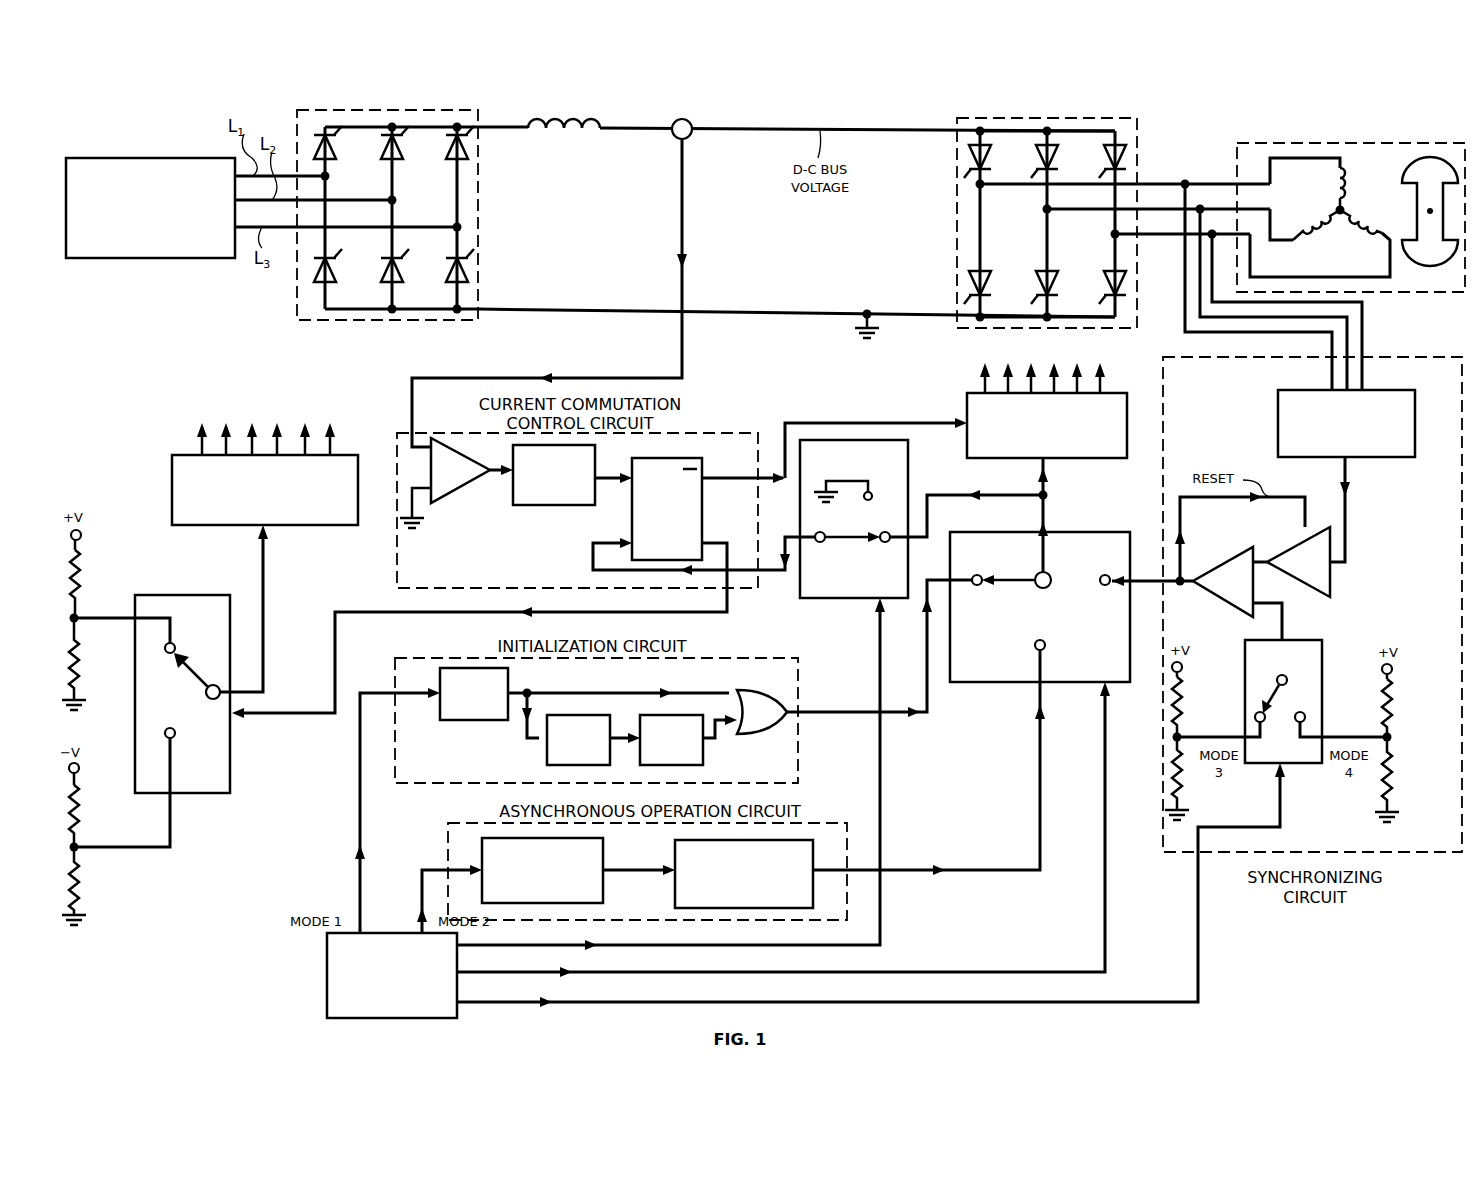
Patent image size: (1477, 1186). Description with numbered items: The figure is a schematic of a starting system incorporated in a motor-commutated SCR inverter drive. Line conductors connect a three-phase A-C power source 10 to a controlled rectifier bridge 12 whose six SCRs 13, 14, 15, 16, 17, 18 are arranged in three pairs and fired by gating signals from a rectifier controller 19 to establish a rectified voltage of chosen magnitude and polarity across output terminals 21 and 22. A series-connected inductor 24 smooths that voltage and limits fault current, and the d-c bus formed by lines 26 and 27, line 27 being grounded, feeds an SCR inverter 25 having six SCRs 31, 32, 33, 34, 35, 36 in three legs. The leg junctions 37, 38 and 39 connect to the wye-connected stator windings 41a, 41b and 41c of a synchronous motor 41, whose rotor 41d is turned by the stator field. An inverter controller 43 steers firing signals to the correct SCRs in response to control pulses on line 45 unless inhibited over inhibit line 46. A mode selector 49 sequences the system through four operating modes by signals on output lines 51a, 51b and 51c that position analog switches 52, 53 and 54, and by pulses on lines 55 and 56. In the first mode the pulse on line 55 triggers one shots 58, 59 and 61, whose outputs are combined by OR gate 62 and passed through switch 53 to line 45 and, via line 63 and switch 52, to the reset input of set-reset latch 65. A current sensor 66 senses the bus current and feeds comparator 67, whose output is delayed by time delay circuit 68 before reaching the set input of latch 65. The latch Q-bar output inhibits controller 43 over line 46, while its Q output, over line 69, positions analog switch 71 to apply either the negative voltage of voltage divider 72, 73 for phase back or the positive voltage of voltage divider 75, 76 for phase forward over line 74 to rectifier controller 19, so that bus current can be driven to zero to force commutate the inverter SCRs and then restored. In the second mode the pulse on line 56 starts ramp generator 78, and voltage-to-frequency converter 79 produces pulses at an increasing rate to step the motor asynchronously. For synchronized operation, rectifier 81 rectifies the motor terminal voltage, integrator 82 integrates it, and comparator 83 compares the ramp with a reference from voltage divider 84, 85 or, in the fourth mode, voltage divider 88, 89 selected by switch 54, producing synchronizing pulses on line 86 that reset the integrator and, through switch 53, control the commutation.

The three-phase A-C power source 10 is at (143, 158).
The controlled rectifier bridge 12 is at (387, 250).
The SCR 13 is at (333, 158).
The SCR 14 is at (400, 158).
The SCR 15 is at (448, 150).
The SCR 16 is at (333, 275).
The SCR 17 is at (384, 268).
The SCR 18 is at (448, 266).
The rectifier controller 19 is at (172, 490).
The output terminal 21 is at (457, 127).
The output terminal 22 is at (470, 305).
The inductor 24 is at (570, 138).
The SCR inverter 25 is at (1047, 211).
The d-c bus line 26 is at (714, 131).
The d-c bus line 27 is at (882, 314).
The inverter SCR 31 is at (988, 162).
The inverter SCR 32 is at (1040, 152).
The inverter SCR 33 is at (1106, 158).
The inverter SCR 34 is at (988, 276).
The inverter SCR 35 is at (1038, 280).
The inverter SCR 36 is at (1106, 282).
The circuit junction 37 is at (984, 188).
The circuit junction 38 is at (1042, 211).
The circuit junction 39 is at (1110, 234).
The synchronous motor 41 is at (1237, 170).
The stator winding 41a is at (1332, 190).
The stator winding 41b is at (1316, 236).
The stator winding 41c is at (1363, 236).
The rotor 41d is at (1428, 210).
The inverter controller 43 is at (1002, 458).
The control pulse line 45 is at (1050, 493).
The inhibit line 46 is at (808, 423).
The mode selector 49 is at (327, 971).
The output line 51a is at (750, 950).
The output line 51b is at (678, 978).
The output line 51c is at (590, 1008).
The analog switch 52 is at (908, 468).
The analog switch 53 is at (980, 688).
The analog switch 54 is at (1310, 640).
The output line 55 is at (352, 872).
The output line 56 is at (420, 882).
The one shot 58 is at (462, 720).
The one shot 59 is at (547, 758).
The one shot 61 is at (703, 756).
The OR gate 62 is at (758, 732).
The line 63 is at (962, 497).
The set-reset latch 65 is at (702, 507).
The current sensor 66 is at (672, 138).
The comparator 67 is at (465, 478).
The time delay circuit 68 is at (548, 505).
The line 69 is at (300, 713).
The analog switch 71 is at (172, 595).
The voltage divider 72 is at (82, 815).
The voltage divider 73 is at (84, 895).
The line 74 is at (266, 555).
The voltage divider 75 is at (84, 585).
The voltage divider 76 is at (84, 672).
The ramp generator 78 is at (603, 852).
The voltage-to-frequency converter 79 is at (675, 892).
The rectifier 81 is at (1278, 415).
The integrator 82 is at (1333, 577).
The comparator 83 is at (1225, 565).
The voltage divider 84 is at (1185, 706).
The voltage divider 85 is at (1186, 786).
The line 86 is at (1179, 586).
The voltage divider 88 is at (1380, 706).
The voltage divider 89 is at (1380, 786).